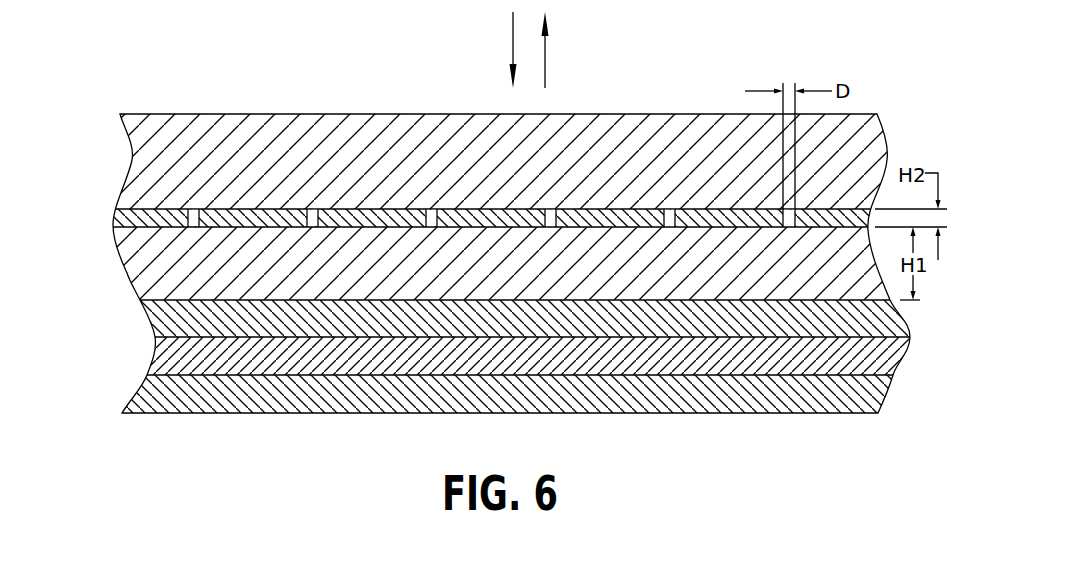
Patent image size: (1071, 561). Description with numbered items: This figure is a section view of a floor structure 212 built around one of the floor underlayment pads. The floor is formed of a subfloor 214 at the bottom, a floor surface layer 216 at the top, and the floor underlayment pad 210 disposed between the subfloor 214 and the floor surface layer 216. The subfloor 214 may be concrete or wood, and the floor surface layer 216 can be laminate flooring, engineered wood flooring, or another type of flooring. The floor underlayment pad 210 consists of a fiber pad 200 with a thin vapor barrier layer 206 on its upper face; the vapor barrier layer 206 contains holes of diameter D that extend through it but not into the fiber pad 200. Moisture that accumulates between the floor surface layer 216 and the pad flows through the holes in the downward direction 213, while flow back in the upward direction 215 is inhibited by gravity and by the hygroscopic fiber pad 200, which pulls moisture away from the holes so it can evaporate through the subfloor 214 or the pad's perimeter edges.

The floor structure 212 is at (142, 83).
The downward direction 213 is at (513, 40).
The upward direction 215 is at (545, 60).
The floor surface layer 216 is at (145, 170).
The vapor barrier layer 206 is at (117, 218).
The floor underlayment pad 210 is at (82, 208).
The fiber pad 200 is at (133, 267).
The subfloor 214 is at (115, 300).